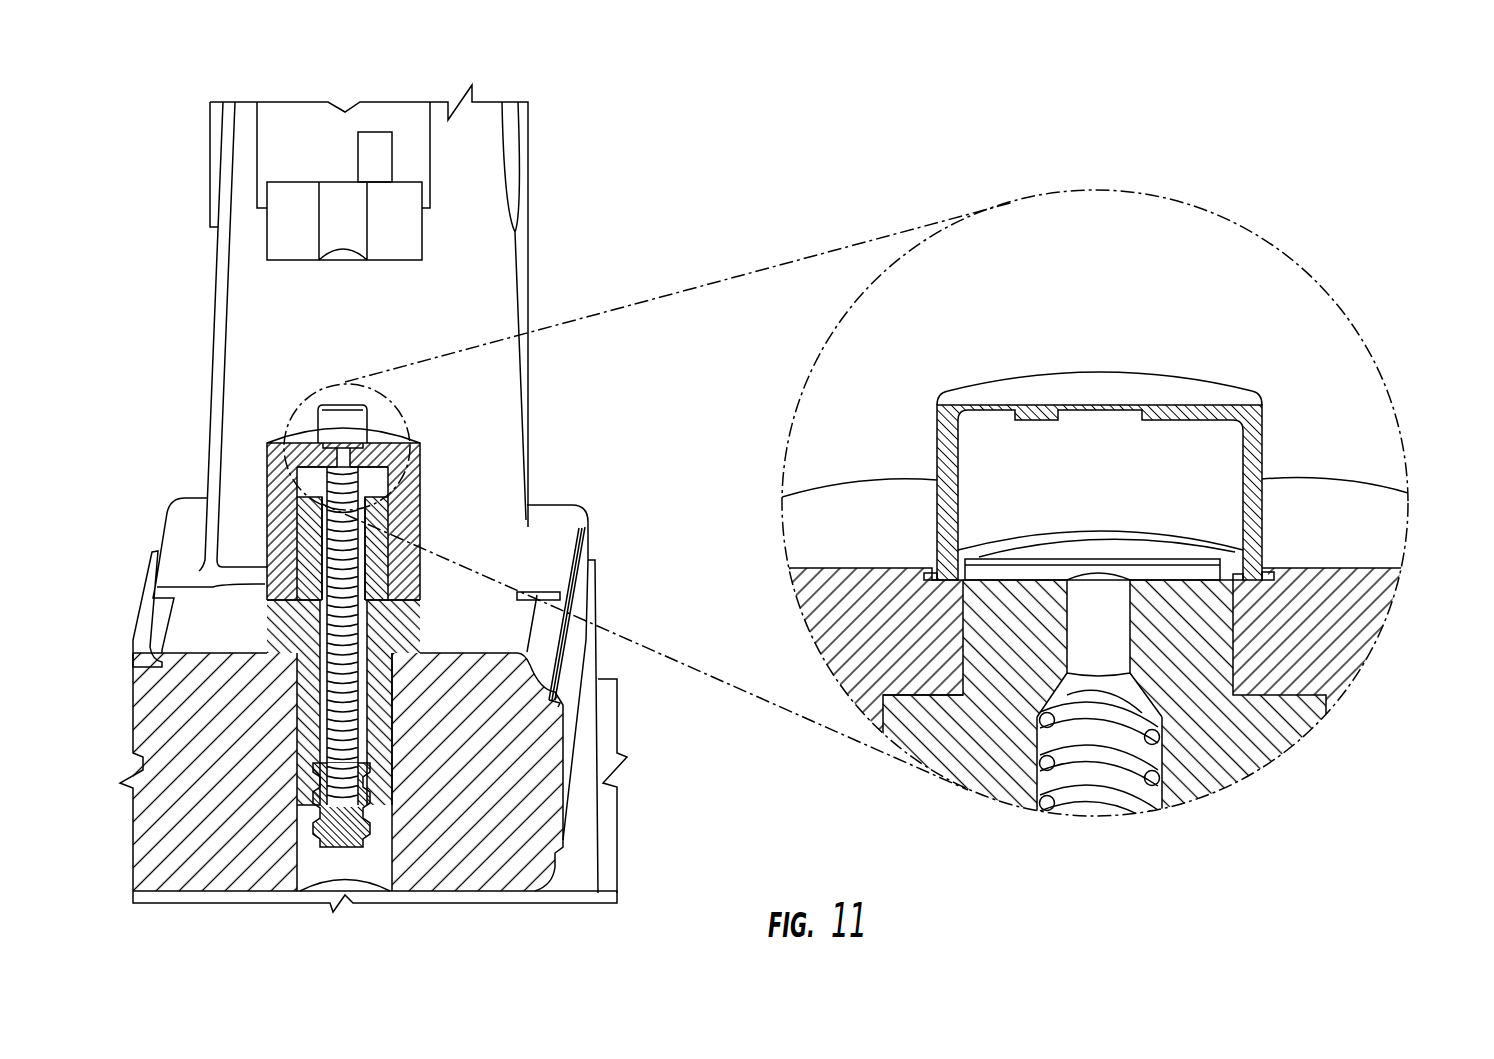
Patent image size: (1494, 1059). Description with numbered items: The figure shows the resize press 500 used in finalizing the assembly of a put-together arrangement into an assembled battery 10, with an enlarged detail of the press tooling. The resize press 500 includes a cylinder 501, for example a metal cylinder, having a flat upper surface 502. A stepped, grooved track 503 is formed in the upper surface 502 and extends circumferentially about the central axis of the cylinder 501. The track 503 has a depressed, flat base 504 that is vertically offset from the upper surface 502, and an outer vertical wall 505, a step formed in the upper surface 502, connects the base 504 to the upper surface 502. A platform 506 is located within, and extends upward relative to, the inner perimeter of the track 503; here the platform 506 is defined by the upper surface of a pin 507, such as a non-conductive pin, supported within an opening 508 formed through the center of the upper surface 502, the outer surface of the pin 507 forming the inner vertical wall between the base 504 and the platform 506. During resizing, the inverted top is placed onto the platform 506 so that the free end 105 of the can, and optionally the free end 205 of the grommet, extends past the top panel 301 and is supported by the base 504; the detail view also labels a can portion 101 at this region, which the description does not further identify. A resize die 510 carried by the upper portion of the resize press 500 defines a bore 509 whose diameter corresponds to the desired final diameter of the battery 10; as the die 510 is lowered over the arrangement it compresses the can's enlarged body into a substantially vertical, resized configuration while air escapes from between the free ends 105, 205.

The resize press 500 is at (617, 180).
The resize die 510 is at (392, 222).
The bore 509 is at (347, 245).
The battery 10 is at (378, 420).
The track 503 is at (385, 440).
The pin 507 is at (373, 478).
The cylinder 501 is at (462, 545).
The cap 101 is at (1057, 383).
The upper surface 502 is at (1338, 488).
The top panel 301 is at (1048, 548).
The platform 506 is at (1225, 575).
The free end 105 is at (1246, 575).
The free end 205 is at (1242, 580).
The base 504 is at (960, 612).
The outer vertical wall 505 is at (951, 584).
The opening 508 is at (961, 655).